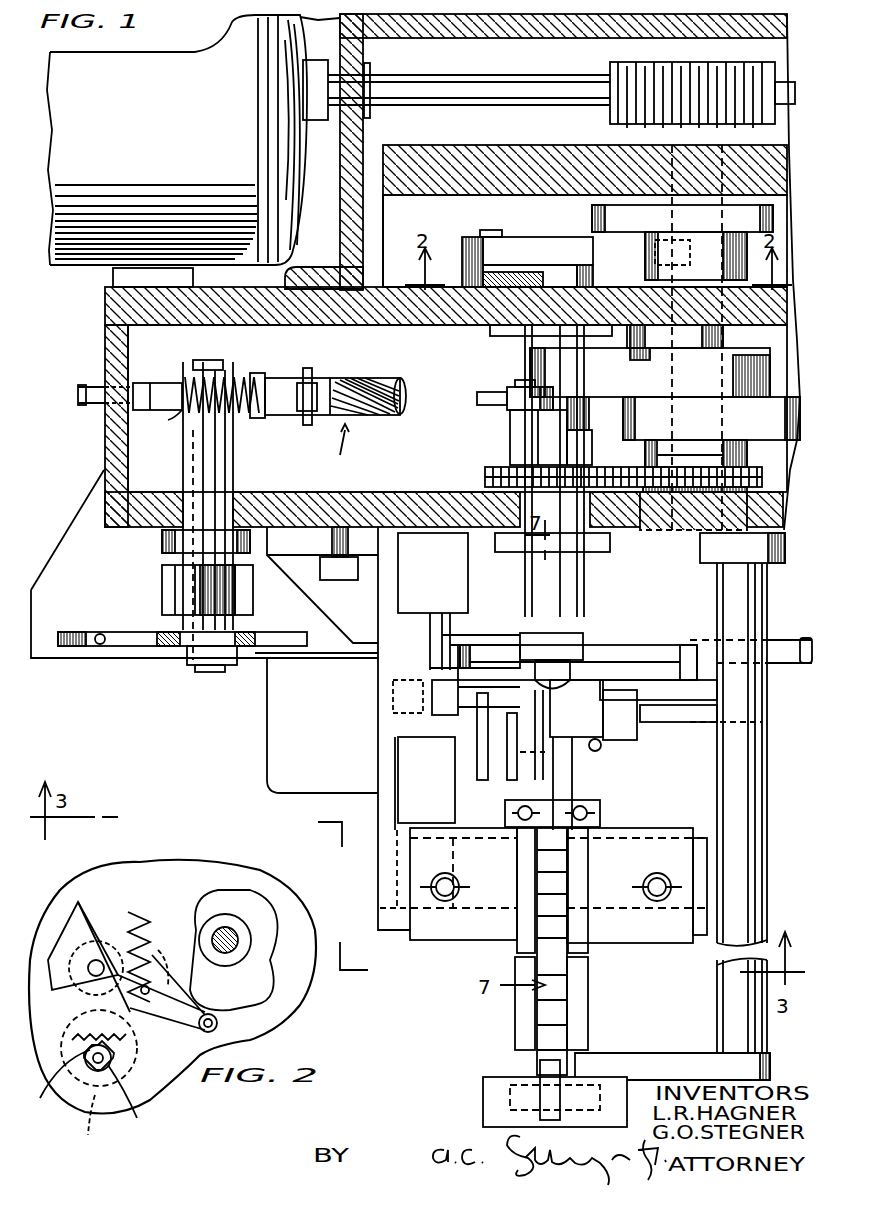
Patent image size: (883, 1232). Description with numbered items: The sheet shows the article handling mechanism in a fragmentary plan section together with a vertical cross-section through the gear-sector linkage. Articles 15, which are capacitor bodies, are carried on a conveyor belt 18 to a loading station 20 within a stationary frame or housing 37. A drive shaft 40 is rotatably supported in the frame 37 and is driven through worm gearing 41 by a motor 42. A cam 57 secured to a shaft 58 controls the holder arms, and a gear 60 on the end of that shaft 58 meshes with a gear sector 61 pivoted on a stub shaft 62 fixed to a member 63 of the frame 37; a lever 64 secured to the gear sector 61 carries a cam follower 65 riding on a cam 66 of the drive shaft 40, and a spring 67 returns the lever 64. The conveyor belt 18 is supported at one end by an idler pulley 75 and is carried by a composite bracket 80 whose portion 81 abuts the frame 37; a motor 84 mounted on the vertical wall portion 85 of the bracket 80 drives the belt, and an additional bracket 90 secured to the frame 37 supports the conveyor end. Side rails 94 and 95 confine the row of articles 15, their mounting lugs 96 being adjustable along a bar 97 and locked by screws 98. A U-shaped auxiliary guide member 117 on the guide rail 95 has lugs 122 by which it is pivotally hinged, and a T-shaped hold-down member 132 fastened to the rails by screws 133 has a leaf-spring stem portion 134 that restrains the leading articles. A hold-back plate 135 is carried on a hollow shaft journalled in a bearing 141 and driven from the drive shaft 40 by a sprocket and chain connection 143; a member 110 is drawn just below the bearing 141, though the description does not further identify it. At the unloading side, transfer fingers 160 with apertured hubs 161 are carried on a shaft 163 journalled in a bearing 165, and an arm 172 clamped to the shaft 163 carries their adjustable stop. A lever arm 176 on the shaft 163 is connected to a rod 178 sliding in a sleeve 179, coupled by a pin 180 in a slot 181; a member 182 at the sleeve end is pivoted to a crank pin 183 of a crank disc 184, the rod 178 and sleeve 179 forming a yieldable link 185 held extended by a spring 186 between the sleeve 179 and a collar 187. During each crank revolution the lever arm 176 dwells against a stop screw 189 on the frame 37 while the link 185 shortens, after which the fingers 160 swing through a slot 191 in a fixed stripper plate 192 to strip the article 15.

In FIG. 1, the articles 15 is at (540, 1031).
In FIG. 1, the conveyor belt 18 is at (545, 1079).
In FIG. 1, the loading station 20 is at (668, 729).
In FIG. 1, the frame 37 is at (125, 522).
In FIG. 1, the drive shaft 40 is at (680, 335).
In FIG. 2, the drive shaft 40 is at (232, 946).
In FIG. 1, the worm gearing 41 is at (612, 78).
In FIG. 1, the motor 42 is at (100, 200).
In FIG. 2, the cam 57 is at (95, 1130).
In FIG. 2, the shaft 58 is at (130, 1106).
In FIG. 1, the gear 60 is at (593, 279).
In FIG. 2, the gear 60 is at (112, 1057).
In FIG. 1, the gear sector 61 is at (520, 272).
In FIG. 2, the gear sector 61 is at (40, 1098).
In FIG. 1, the stub shaft 62 is at (462, 245).
In FIG. 2, the stub shaft 62 is at (60, 955).
In FIG. 1, the member 63 is at (470, 315).
In FIG. 2, the member 63 is at (80, 927).
In FIG. 1, the lever 64 is at (552, 250).
In FIG. 2, the lever 64 is at (172, 958).
In FIG. 1, the cam follower 65 is at (645, 225).
In FIG. 2, the cam follower 65 is at (180, 1002).
In FIG. 1, the cam 66 is at (615, 222).
In FIG. 2, the cam 66 is at (228, 896).
In FIG. 2, the spring 67 is at (142, 918).
In FIG. 1, the idler pulley 75 is at (520, 1116).
In FIG. 1, the composite bracket 80 is at (402, 663).
In FIG. 1, the portion 81 is at (300, 555).
In FIG. 1, the motor 84 is at (275, 749).
In FIG. 1, the wall portion 85 is at (385, 746).
In FIG. 1, the bracket 90 is at (740, 766).
In FIG. 1, the side rail 94 is at (520, 1006).
In FIG. 1, the side rail 95 is at (590, 1001).
In FIG. 1, the mounting lugs 96 is at (470, 936).
In FIG. 1, the bar 97 is at (385, 865).
In FIG. 1, the screws 98 is at (445, 890).
In FIG. 1, the spindle housing 110 is at (468, 616).
In FIG. 1, the auxiliary guide member 117 is at (672, 648).
In FIG. 1, the lugs 122 is at (580, 738).
In FIG. 1, the hold-down member 132 is at (540, 778).
In FIG. 1, the screws 133 is at (600, 813).
In FIG. 1, the stem portion 134 is at (560, 741).
In FIG. 1, the hold-back plate 135 is at (640, 646).
In FIG. 1, the bearing 141 is at (540, 571).
In FIG. 1, the sprocket and chain connection 143 is at (485, 481).
In FIG. 1, the transfer fingers 160 is at (165, 632).
In FIG. 1, the apertured hub 161 is at (186, 665).
In FIG. 1, the shaft 163 is at (192, 452).
In FIG. 1, the bearing 165 is at (210, 470).
In FIG. 1, the arm 172 is at (165, 578).
In FIG. 1, the lever arm 176 is at (168, 383).
In FIG. 1, the rod 178 is at (280, 378).
In FIG. 1, the sleeve 179 is at (338, 378).
In FIG. 1, the pin 180 is at (310, 368).
In FIG. 1, the slot 181 is at (302, 418).
In FIG. 1, the member 182 is at (493, 392).
In FIG. 1, the crank pin 183 is at (532, 385).
In FIG. 1, the crank disc 184 is at (520, 426).
In FIG. 1, the resilient link 185 is at (327, 454).
In FIG. 1, the spring 186 is at (228, 378).
In FIG. 1, the collar 187 is at (182, 418).
In FIG. 1, the stop screw 189 is at (100, 400).
In FIG. 1, the slot 191 is at (97, 646).
In FIG. 1, the stripper plate 192 is at (118, 660).